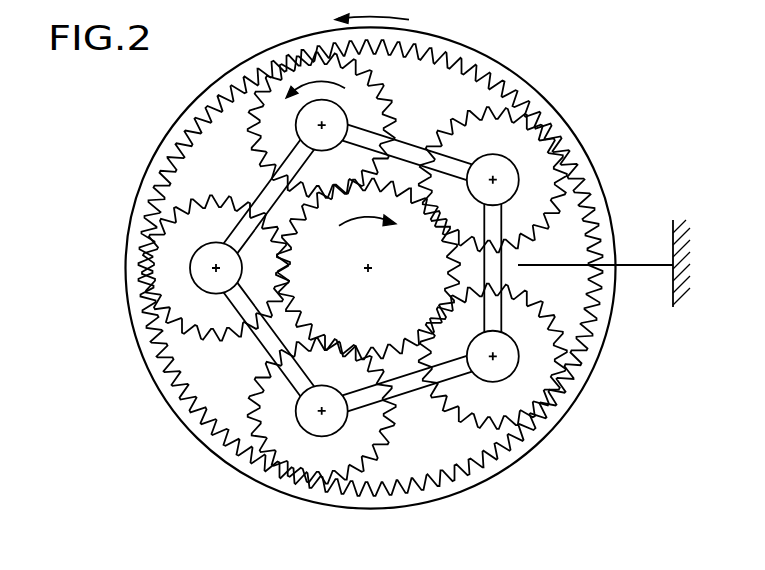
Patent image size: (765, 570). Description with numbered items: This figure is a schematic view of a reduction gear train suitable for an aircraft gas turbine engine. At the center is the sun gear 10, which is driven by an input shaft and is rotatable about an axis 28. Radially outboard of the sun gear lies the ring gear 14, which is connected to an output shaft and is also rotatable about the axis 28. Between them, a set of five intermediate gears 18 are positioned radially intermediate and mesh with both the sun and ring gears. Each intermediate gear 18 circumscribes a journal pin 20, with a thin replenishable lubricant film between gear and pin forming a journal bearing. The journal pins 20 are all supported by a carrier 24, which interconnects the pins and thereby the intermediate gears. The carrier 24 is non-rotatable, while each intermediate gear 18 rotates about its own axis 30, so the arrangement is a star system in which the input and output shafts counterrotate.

The sun gear 10 is at (377, 310).
The ring gear 14 is at (601, 201).
The intermediate gears 18 is at (203, 322).
The journal pin 20 is at (200, 271).
The carrier 24 is at (495, 236).
The axis 28 is at (369, 270).
The axes 30 is at (489, 179).